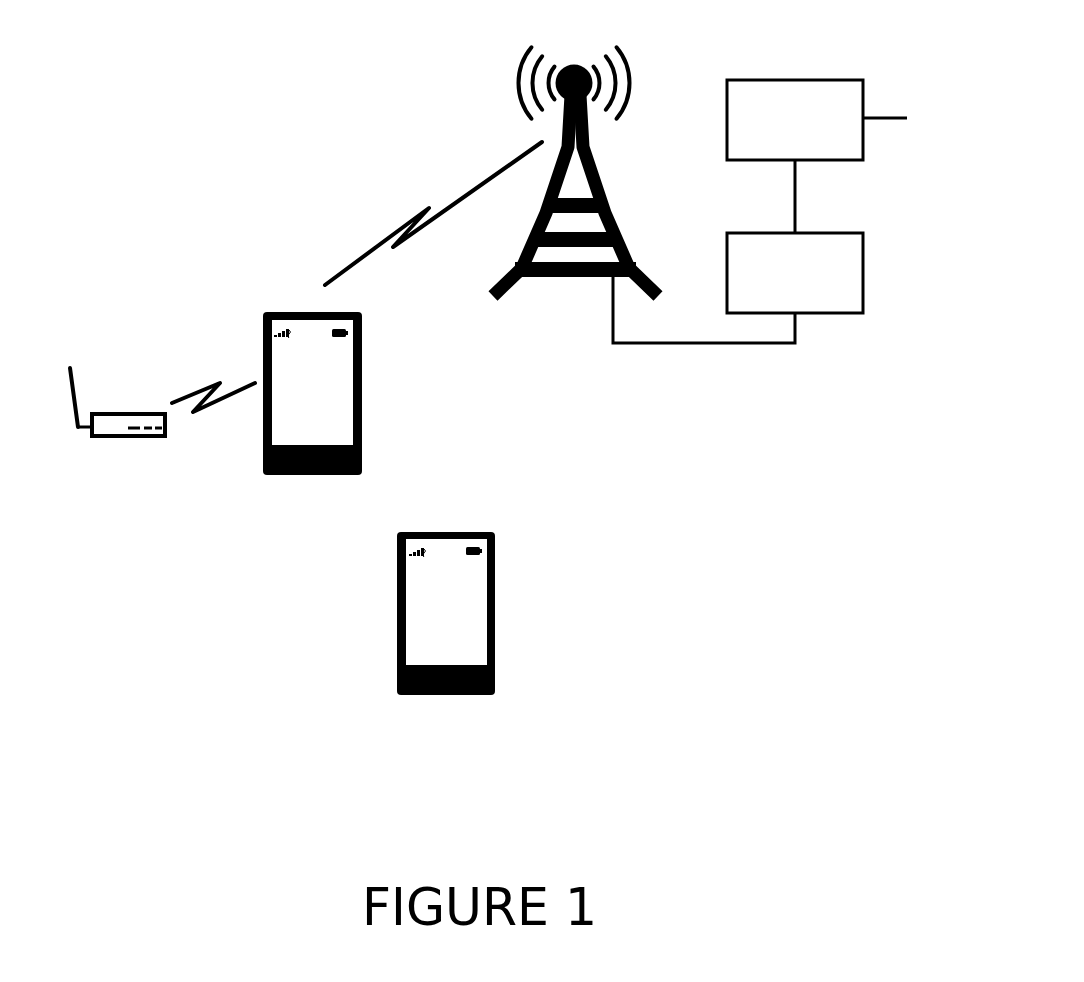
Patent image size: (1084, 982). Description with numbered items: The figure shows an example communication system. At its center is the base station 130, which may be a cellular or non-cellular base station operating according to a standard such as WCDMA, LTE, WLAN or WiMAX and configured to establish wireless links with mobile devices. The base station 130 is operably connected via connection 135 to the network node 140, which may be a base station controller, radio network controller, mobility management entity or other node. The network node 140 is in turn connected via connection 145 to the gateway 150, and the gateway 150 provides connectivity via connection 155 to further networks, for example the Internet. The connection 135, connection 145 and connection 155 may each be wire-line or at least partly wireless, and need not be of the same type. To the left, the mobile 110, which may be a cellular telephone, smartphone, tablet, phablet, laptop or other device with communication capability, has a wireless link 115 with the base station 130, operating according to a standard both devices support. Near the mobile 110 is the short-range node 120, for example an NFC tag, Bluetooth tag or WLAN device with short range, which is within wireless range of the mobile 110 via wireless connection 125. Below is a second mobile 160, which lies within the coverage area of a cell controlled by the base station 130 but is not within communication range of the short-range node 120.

The mobile 110 is at (362, 392).
The wireless link 115 is at (412, 226).
The short-range node 120 is at (142, 412).
The wireless connection 125 is at (227, 402).
The base station 130 is at (560, 277).
The connection 135 is at (710, 343).
The network node 140 is at (795, 273).
The connection 145 is at (795, 210).
The gateway 150 is at (795, 120).
The connection 155 is at (885, 118).
The mobile 160 is at (495, 618).